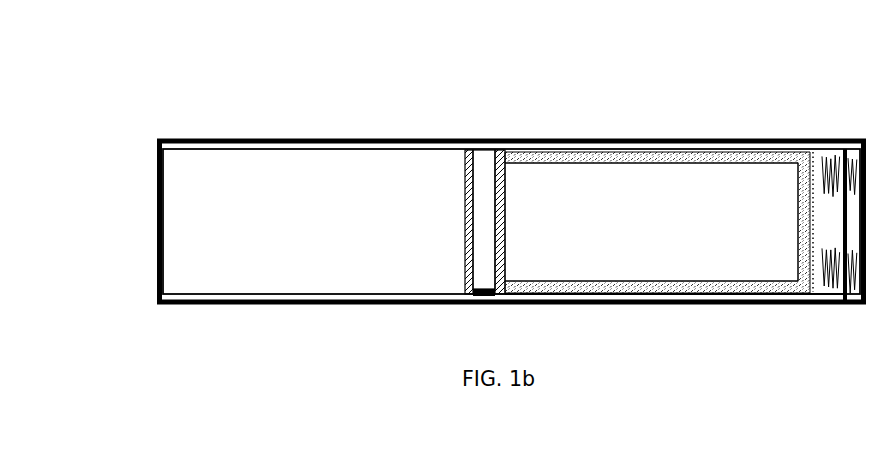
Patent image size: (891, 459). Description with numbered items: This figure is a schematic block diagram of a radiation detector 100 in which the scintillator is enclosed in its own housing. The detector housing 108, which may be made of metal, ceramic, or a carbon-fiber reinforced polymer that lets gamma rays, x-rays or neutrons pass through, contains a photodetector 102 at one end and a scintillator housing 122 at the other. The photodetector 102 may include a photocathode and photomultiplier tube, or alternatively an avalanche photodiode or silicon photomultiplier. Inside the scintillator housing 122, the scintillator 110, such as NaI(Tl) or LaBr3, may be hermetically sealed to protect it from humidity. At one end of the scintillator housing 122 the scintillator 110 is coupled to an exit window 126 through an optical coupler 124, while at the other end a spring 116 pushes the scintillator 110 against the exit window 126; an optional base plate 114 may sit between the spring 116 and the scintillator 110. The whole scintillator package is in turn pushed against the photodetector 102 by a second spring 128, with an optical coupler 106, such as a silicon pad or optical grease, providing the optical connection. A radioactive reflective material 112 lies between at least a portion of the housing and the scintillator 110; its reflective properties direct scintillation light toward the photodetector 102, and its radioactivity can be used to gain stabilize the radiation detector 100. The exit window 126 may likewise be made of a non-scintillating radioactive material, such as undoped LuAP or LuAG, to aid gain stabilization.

The radiation detector 100 is at (488, 190).
The photodetector 102 is at (488, 204).
The optical coupler 106 is at (404, 200).
The detector housing 108 is at (511, 200).
The scintillator 110 is at (646, 194).
The radioactive reflective material 112 is at (657, 200).
The base plate 114 is at (767, 195).
The spring 116 is at (793, 247).
The scintillator housing 122 is at (675, 320).
The optical coupler 124 is at (449, 317).
The exit window 126 is at (465, 200).
The spring 128 is at (825, 199).